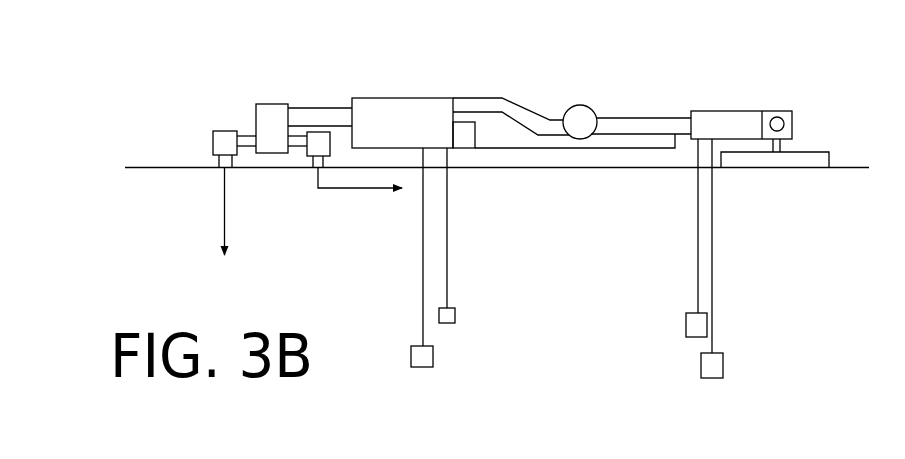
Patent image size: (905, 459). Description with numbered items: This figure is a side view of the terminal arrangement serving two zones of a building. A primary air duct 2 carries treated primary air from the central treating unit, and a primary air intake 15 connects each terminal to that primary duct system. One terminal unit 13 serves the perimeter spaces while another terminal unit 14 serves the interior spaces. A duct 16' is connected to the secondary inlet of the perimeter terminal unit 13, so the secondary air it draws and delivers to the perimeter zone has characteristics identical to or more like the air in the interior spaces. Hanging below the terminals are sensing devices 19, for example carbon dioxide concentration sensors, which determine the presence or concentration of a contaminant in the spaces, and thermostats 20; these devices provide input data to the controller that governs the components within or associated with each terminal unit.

The primary air duct 2 is at (578, 139).
The terminal unit 13 is at (435, 98).
The terminal unit 14 is at (727, 110).
The primary air intake 15 is at (468, 98).
The duct 16' is at (489, 176).
The sensing device 19 is at (455, 317).
The thermostat 20 is at (433, 351).